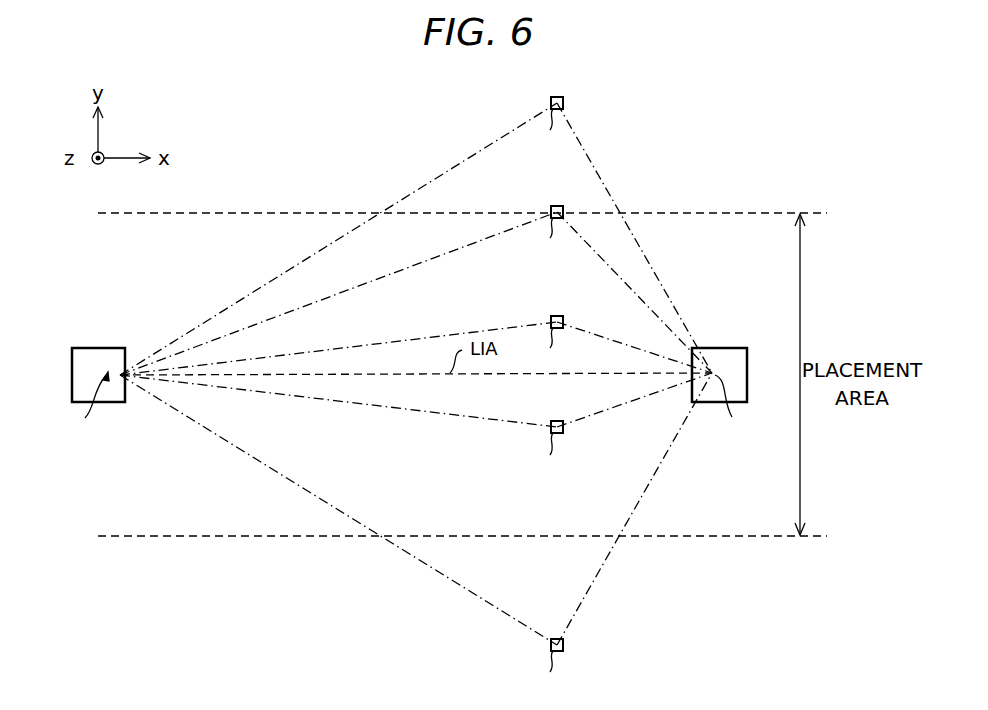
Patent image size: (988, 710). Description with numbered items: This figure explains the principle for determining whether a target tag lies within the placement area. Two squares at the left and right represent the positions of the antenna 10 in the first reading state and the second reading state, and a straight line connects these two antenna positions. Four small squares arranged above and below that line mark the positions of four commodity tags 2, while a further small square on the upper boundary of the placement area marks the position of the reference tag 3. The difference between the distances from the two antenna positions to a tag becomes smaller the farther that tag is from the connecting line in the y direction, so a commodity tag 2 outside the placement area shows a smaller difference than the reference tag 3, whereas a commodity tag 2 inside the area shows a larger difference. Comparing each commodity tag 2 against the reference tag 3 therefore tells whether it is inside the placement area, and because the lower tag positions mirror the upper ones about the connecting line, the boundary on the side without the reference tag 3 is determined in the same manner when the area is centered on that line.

The commodity tag 2 is at (558, 97).
The reference tag 3 is at (558, 206).
The antenna 10 is at (92, 348).